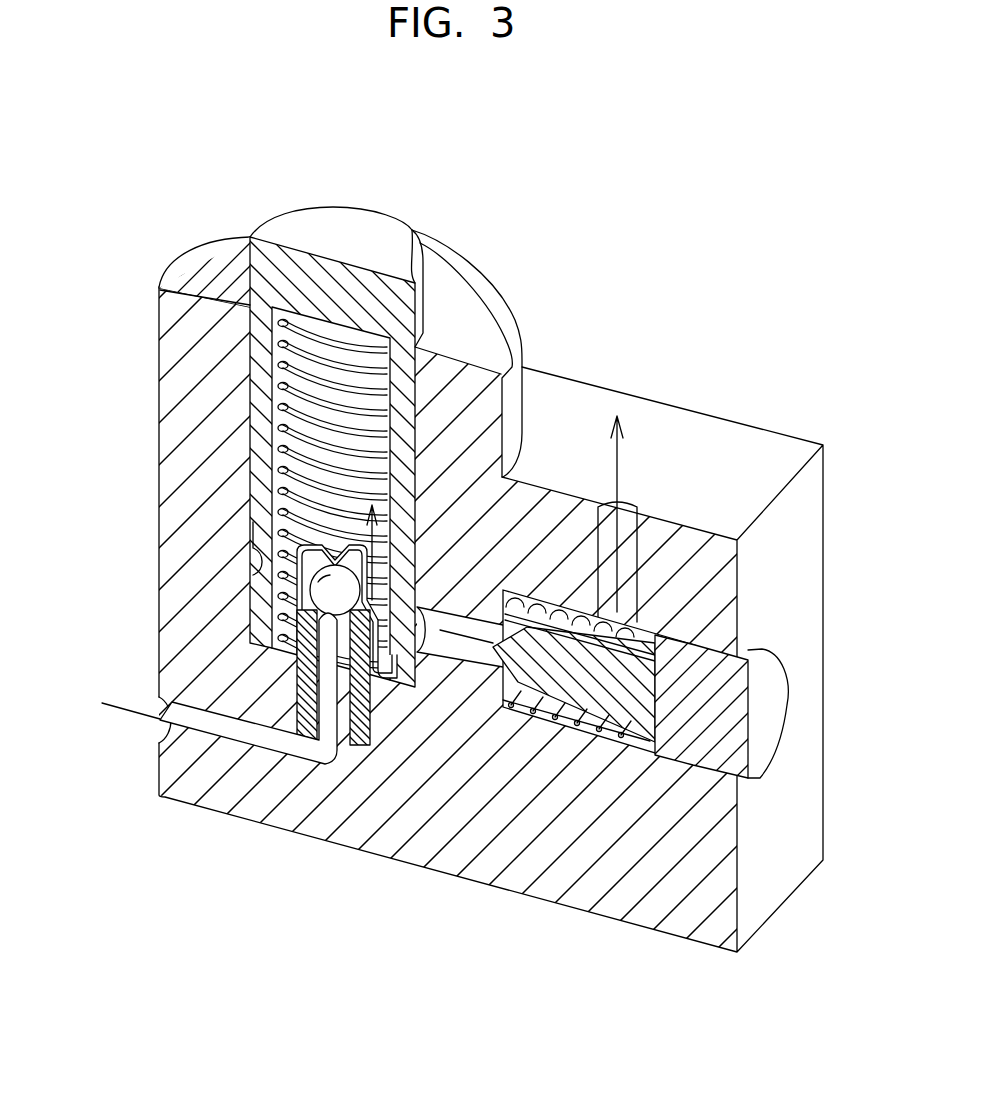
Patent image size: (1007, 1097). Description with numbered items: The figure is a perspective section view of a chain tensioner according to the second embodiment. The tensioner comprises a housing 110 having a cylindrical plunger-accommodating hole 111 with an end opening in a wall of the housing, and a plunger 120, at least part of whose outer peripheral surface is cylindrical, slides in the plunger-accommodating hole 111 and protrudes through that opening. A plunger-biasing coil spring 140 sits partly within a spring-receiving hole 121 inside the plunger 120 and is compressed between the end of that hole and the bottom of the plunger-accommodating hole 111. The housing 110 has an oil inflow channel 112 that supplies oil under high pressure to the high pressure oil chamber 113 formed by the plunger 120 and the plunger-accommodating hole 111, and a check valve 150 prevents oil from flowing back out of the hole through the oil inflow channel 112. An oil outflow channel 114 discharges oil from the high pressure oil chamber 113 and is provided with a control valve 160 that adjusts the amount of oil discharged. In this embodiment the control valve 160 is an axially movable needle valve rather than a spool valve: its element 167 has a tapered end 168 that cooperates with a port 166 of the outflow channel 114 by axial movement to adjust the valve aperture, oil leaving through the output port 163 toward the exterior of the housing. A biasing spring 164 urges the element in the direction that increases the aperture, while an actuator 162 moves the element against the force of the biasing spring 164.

The housing 110 is at (580, 407).
The plunger 120 is at (315, 270).
The spring-receiving hole 121 is at (250, 303).
The high pressure oil chamber 113 is at (287, 473).
The plunger-accommodating hole 111 is at (260, 565).
The plunger-biasing coil spring 140 is at (293, 393).
The check valve 150 is at (323, 593).
The oil outflow channel 114 is at (352, 762).
The oil inflow channel 112 is at (228, 748).
The port 166 is at (455, 648).
The biasing spring 164 is at (590, 703).
The tapered end 168 is at (500, 688).
The element 167 is at (557, 675).
The output port 163 is at (665, 655).
The actuator 162 is at (753, 752).
The control valve 160 is at (793, 1035).